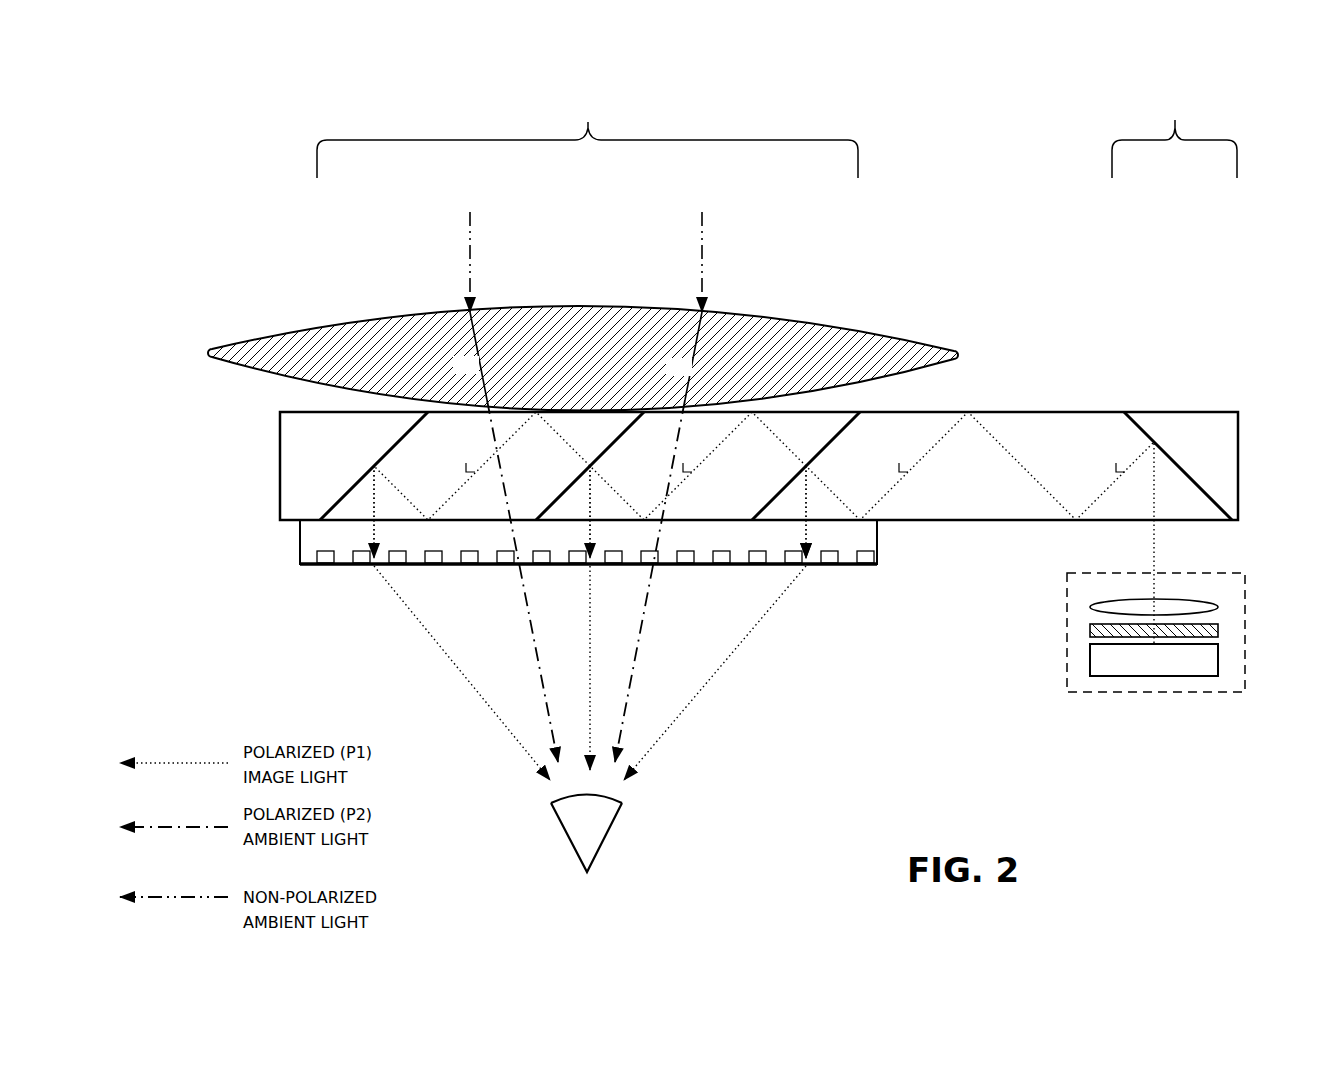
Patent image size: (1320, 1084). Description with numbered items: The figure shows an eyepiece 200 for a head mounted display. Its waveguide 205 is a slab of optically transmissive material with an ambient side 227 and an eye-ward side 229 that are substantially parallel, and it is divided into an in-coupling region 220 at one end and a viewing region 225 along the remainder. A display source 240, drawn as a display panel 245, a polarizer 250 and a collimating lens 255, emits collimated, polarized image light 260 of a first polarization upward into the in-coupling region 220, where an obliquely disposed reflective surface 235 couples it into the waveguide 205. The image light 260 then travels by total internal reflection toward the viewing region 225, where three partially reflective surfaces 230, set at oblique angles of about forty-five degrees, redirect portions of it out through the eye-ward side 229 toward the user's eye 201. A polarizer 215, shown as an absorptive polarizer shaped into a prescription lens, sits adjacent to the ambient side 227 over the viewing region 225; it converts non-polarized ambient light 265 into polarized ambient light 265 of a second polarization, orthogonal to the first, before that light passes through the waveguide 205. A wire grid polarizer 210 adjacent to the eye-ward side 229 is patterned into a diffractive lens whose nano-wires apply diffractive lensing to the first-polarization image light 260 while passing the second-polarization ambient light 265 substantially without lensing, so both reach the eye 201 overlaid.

The eyepiece 200 is at (190, 177).
The eye 201 is at (604, 839).
The waveguide 205 is at (1203, 412).
The wire grid polarizer 210 is at (878, 540).
The polarizer 215 is at (598, 355).
The in-coupling region 220 is at (1174, 123).
The viewing region 225 is at (587, 122).
The ambient side 227 is at (1060, 338).
The eye-ward side 229 is at (840, 673).
The partially reflective surfaces 230 is at (342, 490).
The reflective surface 235 is at (1207, 497).
The display source 240 is at (1189, 653).
The display panel 245 is at (1218, 662).
The polarizer 250 is at (1218, 630).
The collimating lens 255 is at (1205, 605).
The image light 260 is at (1153, 500).
The ambient light 265 is at (470, 276).